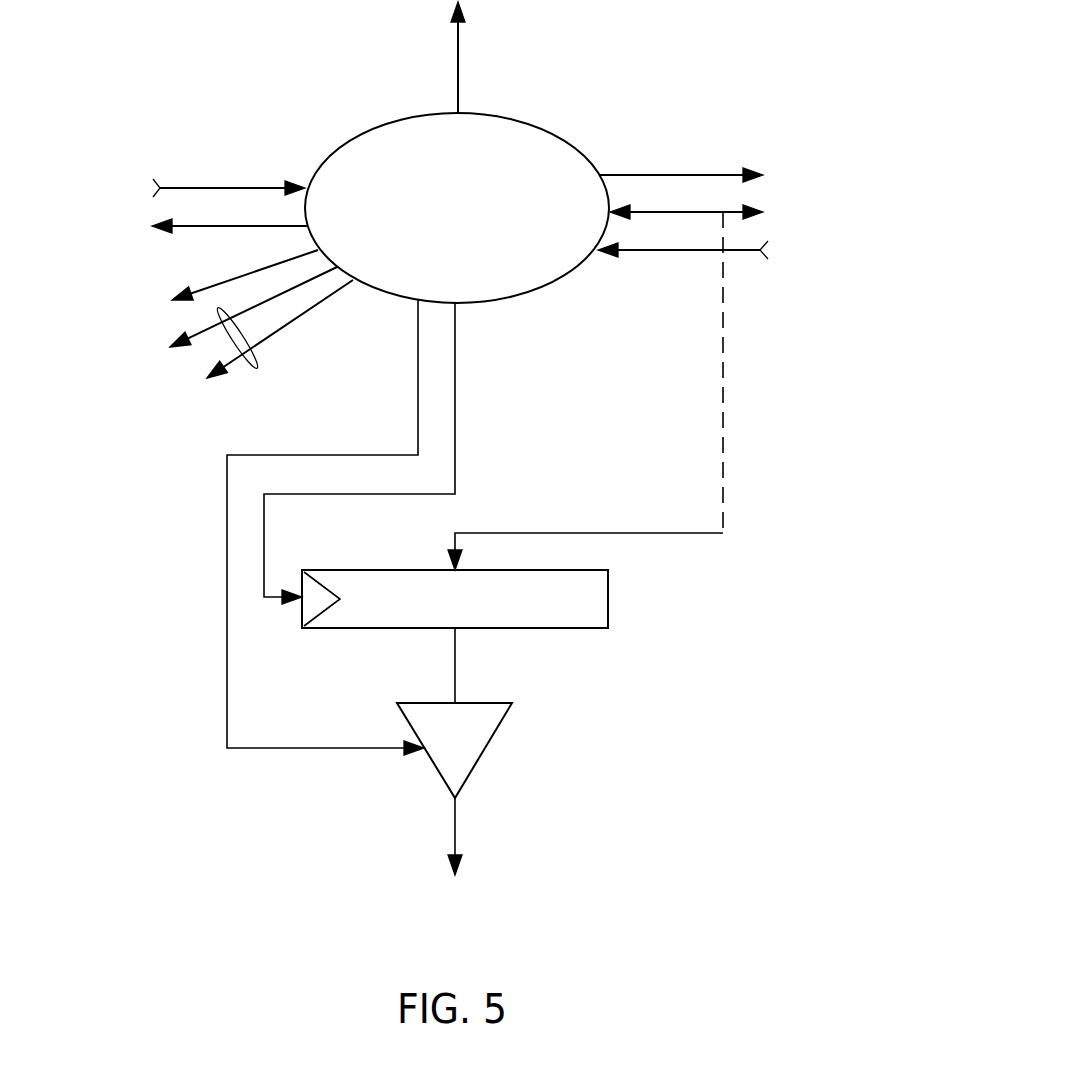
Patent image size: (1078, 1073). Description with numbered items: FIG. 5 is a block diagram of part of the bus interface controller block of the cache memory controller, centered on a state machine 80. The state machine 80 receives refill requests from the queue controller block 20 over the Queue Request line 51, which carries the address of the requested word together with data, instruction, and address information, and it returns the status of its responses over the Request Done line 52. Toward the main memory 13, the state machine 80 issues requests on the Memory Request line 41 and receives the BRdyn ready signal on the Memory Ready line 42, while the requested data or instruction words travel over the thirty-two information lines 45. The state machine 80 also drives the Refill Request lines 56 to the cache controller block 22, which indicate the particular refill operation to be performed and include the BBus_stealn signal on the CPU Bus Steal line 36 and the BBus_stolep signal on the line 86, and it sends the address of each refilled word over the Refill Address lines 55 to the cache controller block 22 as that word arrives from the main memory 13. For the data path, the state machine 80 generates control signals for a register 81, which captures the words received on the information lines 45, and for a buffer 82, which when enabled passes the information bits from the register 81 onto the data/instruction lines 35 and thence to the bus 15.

The state machine 80 is at (472, 223).
The CPU Bus Steal line 36 is at (458, 77).
The queue controller block 20 is at (81, 201).
The Queue Request line 51 is at (228, 188).
The Request Done line 52 is at (247, 225).
The Refill Address lines 55 is at (227, 278).
The cache controller block 22 is at (89, 355).
The line 86 is at (305, 313).
The Refill Request lines 56 is at (257, 368).
The main memory 13 is at (834, 210).
The Memory Request line 41 is at (667, 173).
The information lines 45 is at (668, 210).
The Memory Ready line 42 is at (667, 252).
The register 81 is at (441, 612).
The buffer 82 is at (438, 740).
The data/instruction lines 35 is at (456, 838).
The bus 15 is at (451, 899).